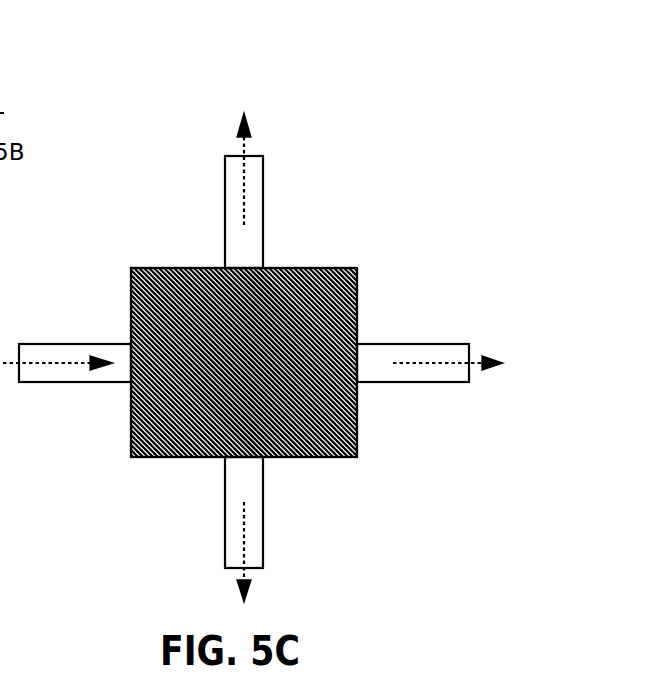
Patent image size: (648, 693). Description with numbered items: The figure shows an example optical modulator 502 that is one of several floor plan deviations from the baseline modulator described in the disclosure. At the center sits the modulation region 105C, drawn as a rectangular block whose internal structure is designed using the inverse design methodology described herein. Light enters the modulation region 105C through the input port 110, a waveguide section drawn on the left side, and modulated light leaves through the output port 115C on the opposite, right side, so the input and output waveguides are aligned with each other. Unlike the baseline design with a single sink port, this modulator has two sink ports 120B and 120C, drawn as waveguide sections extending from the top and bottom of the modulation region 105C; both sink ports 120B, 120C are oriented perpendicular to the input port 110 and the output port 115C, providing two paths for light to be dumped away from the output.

The optical modulator 502 is at (321, 68).
The modulation region 105C is at (265, 376).
The input port 110 is at (67, 331).
The output port 115C is at (430, 331).
The sink port 120B is at (305, 190).
The sink port 120C is at (305, 529).